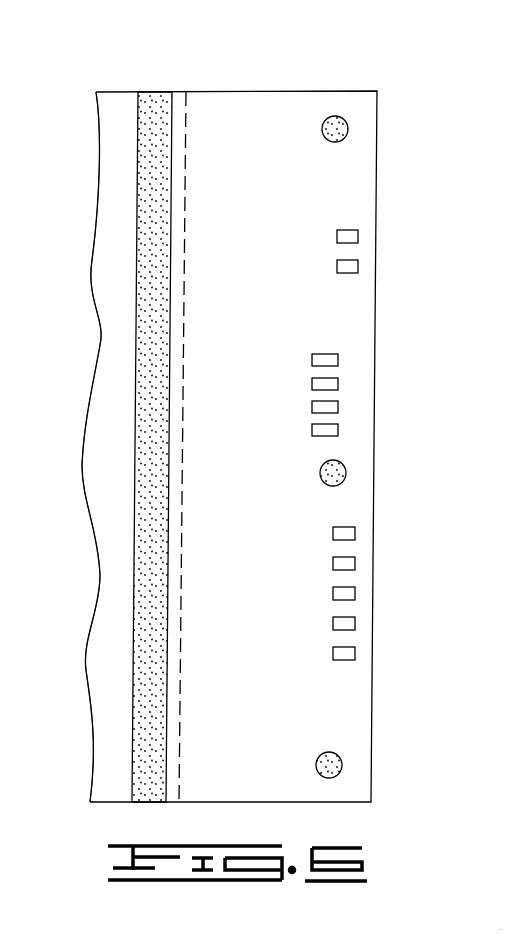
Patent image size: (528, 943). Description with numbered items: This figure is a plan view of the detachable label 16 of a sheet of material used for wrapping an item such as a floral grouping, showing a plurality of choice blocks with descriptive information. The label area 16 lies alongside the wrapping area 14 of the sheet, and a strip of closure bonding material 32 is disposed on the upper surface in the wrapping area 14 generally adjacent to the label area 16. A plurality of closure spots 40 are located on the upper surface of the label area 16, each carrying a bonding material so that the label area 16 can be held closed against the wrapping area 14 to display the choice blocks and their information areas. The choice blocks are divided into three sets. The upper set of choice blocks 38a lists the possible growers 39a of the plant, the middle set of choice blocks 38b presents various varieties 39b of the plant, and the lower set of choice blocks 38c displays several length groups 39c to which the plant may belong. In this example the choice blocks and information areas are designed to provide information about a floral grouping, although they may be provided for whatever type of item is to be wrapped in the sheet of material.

The label area 16 is at (389, 67).
The wrapping area 14 is at (115, 233).
The closure bonding material 32 is at (147, 518).
The closure spots 40 is at (340, 127).
The upper set of choice blocks 38a is at (359, 265).
The growers 39a is at (316, 277).
The middle set of choice blocks 38b is at (338, 430).
The varieties 39b is at (278, 362).
The lower set of choice blocks 38c is at (356, 534).
The length groups 39c is at (305, 541).